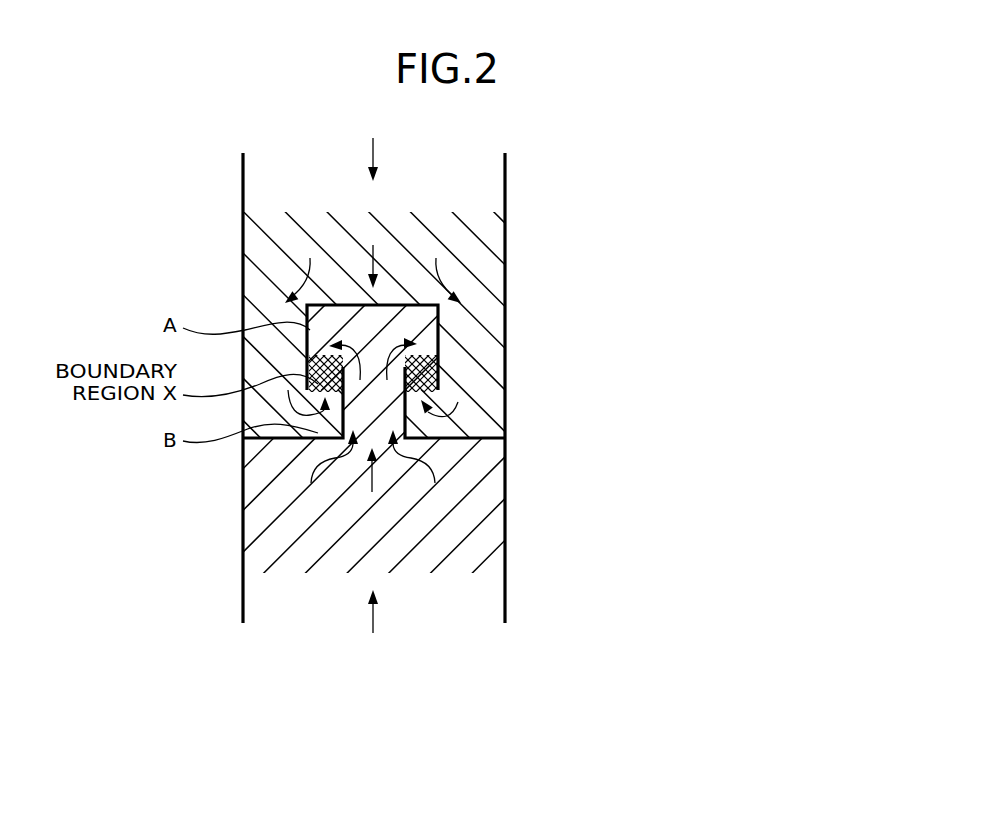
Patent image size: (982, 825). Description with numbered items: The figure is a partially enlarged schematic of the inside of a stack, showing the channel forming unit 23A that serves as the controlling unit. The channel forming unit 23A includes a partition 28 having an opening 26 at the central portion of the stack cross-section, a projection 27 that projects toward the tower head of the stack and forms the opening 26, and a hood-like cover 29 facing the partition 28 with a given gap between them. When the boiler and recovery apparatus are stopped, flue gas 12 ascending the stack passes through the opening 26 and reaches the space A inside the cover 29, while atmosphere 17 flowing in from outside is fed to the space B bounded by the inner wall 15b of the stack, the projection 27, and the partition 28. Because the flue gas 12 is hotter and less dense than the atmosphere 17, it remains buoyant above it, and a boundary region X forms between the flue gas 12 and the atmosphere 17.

The flue gas 12 is at (373, 620).
The inner wall 15b is at (243, 530).
The atmosphere 17 is at (373, 156).
The channel forming unit 23A is at (462, 400).
The opening 26 is at (484, 331).
The projection 27 is at (440, 395).
The partition 28 is at (476, 441).
The cover 29 is at (393, 302).